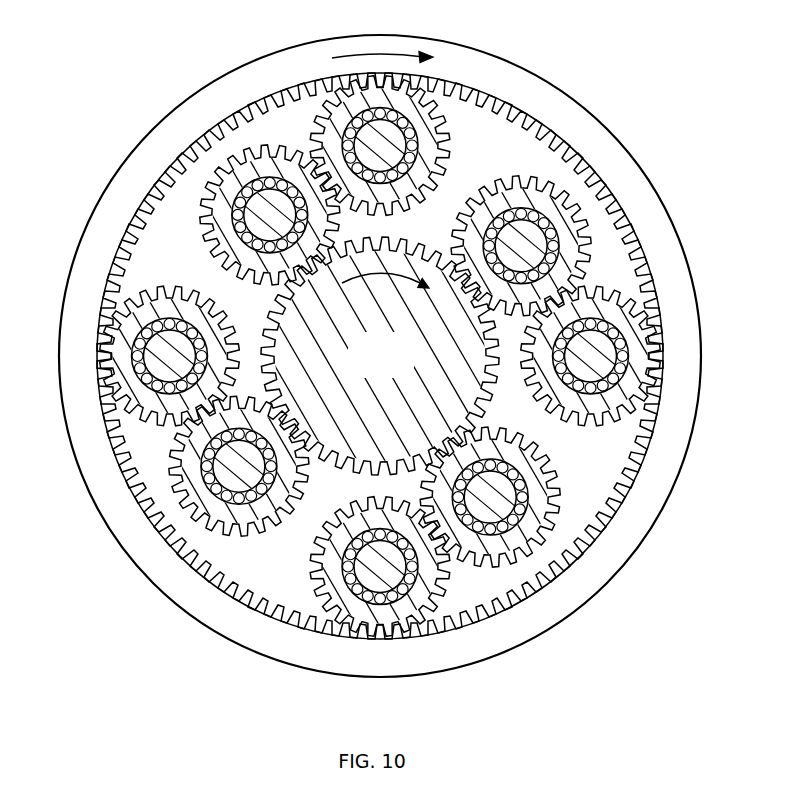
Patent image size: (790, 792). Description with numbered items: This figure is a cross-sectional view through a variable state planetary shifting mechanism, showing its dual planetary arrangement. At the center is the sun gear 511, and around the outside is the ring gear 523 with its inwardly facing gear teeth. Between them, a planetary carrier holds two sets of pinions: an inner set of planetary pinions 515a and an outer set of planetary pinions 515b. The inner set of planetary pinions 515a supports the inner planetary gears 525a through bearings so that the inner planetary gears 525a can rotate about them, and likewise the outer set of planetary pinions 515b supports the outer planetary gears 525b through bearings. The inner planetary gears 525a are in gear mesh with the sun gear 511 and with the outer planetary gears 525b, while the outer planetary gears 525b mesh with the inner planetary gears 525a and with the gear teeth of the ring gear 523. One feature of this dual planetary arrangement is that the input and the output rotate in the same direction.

The sun gear 511 is at (402, 370).
The ring gear 523 is at (562, 99).
The inner planetary gears 525a is at (200, 212).
The outer planetary gears 525b is at (316, 112).
The inner set of planetary pinions 515a is at (247, 190).
The outer set of planetary pinions 515b is at (445, 148).